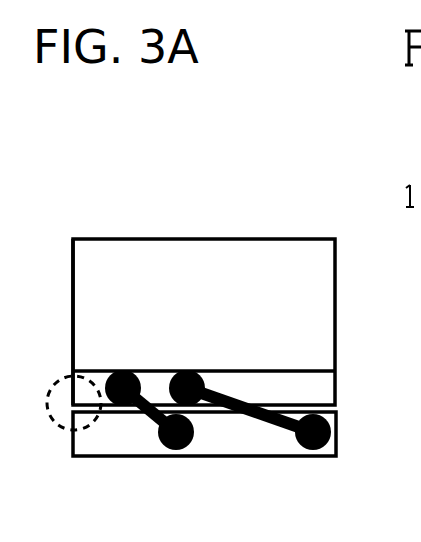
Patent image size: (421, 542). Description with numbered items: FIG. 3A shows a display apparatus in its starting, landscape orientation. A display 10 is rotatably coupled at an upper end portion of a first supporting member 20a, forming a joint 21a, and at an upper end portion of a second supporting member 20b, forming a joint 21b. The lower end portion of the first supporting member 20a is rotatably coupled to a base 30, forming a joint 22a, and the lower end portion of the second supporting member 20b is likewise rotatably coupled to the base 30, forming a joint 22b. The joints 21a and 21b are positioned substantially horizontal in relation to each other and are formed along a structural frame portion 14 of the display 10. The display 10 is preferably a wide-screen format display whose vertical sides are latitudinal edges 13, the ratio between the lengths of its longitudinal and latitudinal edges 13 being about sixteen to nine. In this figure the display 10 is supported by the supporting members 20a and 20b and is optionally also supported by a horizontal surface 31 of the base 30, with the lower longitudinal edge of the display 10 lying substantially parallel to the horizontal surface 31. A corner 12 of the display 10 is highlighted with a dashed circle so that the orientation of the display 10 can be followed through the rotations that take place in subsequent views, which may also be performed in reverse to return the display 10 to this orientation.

The display 10 is at (248, 249).
The latitudinal edge 13 is at (67, 316).
The structural frame portion 14 is at (322, 387).
The horizontal surface 31 is at (352, 405).
The base 30 is at (219, 454).
The corner 12 is at (54, 398).
The first supporting member 20a is at (139, 417).
The second supporting member 20b is at (250, 421).
The joint 21a is at (121, 364).
The joint 21b is at (195, 364).
The joint 22a is at (180, 451).
The joint 22b is at (318, 451).